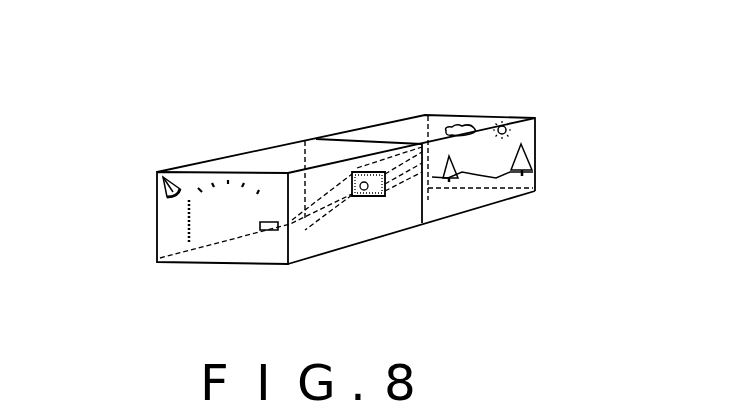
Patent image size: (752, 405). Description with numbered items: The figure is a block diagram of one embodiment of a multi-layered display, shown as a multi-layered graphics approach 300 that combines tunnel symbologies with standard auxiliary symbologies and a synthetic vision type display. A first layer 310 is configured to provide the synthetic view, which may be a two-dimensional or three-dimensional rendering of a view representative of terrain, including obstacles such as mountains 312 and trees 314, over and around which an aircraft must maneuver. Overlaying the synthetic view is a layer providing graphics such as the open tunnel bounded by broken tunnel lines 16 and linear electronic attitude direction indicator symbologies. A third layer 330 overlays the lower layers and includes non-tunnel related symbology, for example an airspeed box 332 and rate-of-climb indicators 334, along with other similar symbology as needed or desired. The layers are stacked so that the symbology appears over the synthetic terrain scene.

The broken tunnel lines 16 is at (321, 193).
The multi-layered graphics approach 300 is at (445, 300).
The first layer 310 is at (468, 115).
The mountains 312 is at (531, 192).
The trees 314 is at (526, 151).
The third layer 330 is at (158, 178).
The airspeed box 332 is at (256, 245).
The rate-of-climb indicators 334 is at (163, 192).